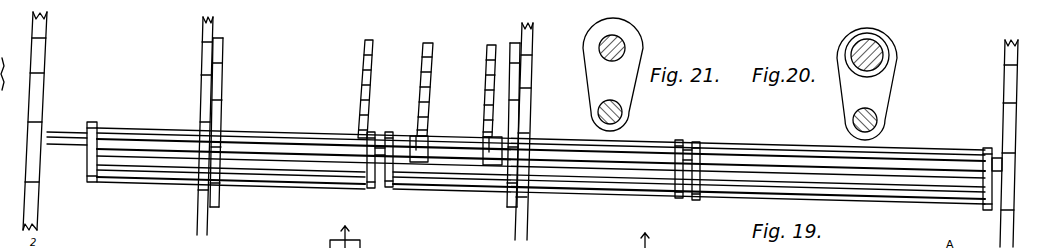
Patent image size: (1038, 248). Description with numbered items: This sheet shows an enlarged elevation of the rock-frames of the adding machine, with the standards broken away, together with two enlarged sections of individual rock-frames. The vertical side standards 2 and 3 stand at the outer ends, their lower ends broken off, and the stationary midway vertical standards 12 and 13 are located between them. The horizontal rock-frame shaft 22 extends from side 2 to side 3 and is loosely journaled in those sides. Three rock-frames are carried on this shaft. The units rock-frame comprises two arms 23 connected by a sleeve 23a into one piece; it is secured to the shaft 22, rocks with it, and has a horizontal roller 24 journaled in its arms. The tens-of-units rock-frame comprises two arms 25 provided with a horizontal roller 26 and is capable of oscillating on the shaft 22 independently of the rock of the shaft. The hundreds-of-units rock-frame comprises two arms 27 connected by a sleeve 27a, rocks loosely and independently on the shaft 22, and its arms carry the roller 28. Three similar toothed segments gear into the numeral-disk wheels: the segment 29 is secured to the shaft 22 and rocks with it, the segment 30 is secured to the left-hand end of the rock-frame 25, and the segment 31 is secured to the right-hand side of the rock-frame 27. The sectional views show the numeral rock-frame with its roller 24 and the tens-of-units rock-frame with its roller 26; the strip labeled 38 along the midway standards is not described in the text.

In FIG. 19, the vertical side standard 2 is at (1006, 62).
In FIG. 19, the vertical side standard 3 is at (47, 28).
In FIG. 19, the midway vertical standard 12 is at (533, 36).
In FIG. 19, the midway vertical standard 13 is at (203, 27).
In FIG. 19, the rock-frame shaft 22 is at (60, 133).
In FIG. 21, the rock-frame shaft 22 is at (625, 44).
In FIG. 20, the rock-frame shaft 22 is at (851, 52).
In FIG. 19, the units rock-frame arm 23 is at (699, 201).
In FIG. 20, the units rock-frame arm 23 is at (884, 90).
In FIG. 19, the sleeve 23a is at (798, 161).
In FIG. 20, the sleeve 23a is at (889, 54).
In FIG. 19, the roller 24 is at (897, 200).
In FIG. 20, the roller 24 is at (877, 121).
In FIG. 19, the tens-of-units rock-frame arm 25 is at (395, 188).
In FIG. 21, the tens-of-units rock-frame arm 25 is at (586, 75).
In FIG. 19, the roller 26 is at (604, 190).
In FIG. 21, the roller 26 is at (622, 113).
In FIG. 19, the hundreds-of-units rock-frame arm 27 is at (99, 182).
In FIG. 19, the sleeve 27a is at (306, 125).
In FIG. 19, the roller 28 is at (176, 176).
In FIG. 19, the toothed segment 29 is at (487, 50).
In FIG. 19, the toothed segment 30 is at (424, 48).
In FIG. 19, the toothed segment 31 is at (365, 45).
In FIG. 19, the strip 38 is at (219, 37).